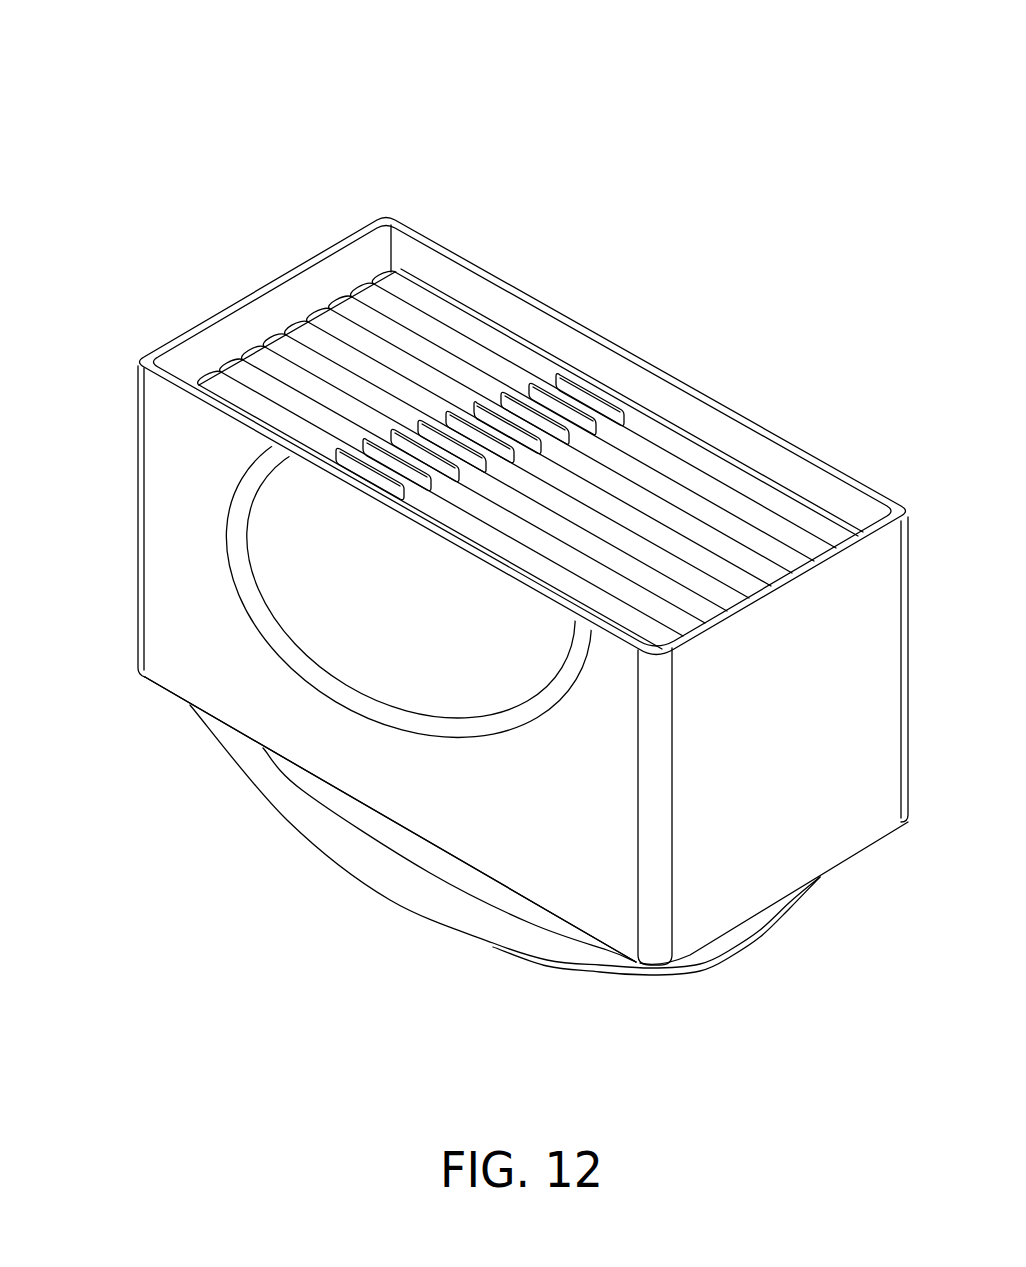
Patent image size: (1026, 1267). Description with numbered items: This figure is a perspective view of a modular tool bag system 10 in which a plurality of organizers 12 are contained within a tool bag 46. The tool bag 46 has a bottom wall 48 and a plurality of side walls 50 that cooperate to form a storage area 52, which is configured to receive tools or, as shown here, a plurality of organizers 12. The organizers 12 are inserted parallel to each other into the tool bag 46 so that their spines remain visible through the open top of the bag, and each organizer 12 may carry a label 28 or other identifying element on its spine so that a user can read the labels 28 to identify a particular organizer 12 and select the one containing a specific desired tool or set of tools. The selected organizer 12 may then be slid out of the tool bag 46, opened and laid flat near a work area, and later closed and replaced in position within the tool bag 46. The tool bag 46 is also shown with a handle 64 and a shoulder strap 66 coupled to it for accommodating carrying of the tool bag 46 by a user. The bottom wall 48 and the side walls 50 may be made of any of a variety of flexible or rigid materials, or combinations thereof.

The modular tool bag system 10 is at (240, 70).
The organizer 12 is at (408, 297).
The label 28 is at (578, 418).
The tool bag 46 is at (198, 322).
The bottom wall 48 is at (162, 712).
The side walls 50 is at (585, 828).
The storage area 52 is at (600, 376).
The handle 64 is at (240, 547).
The shoulder strap 66 is at (450, 910).